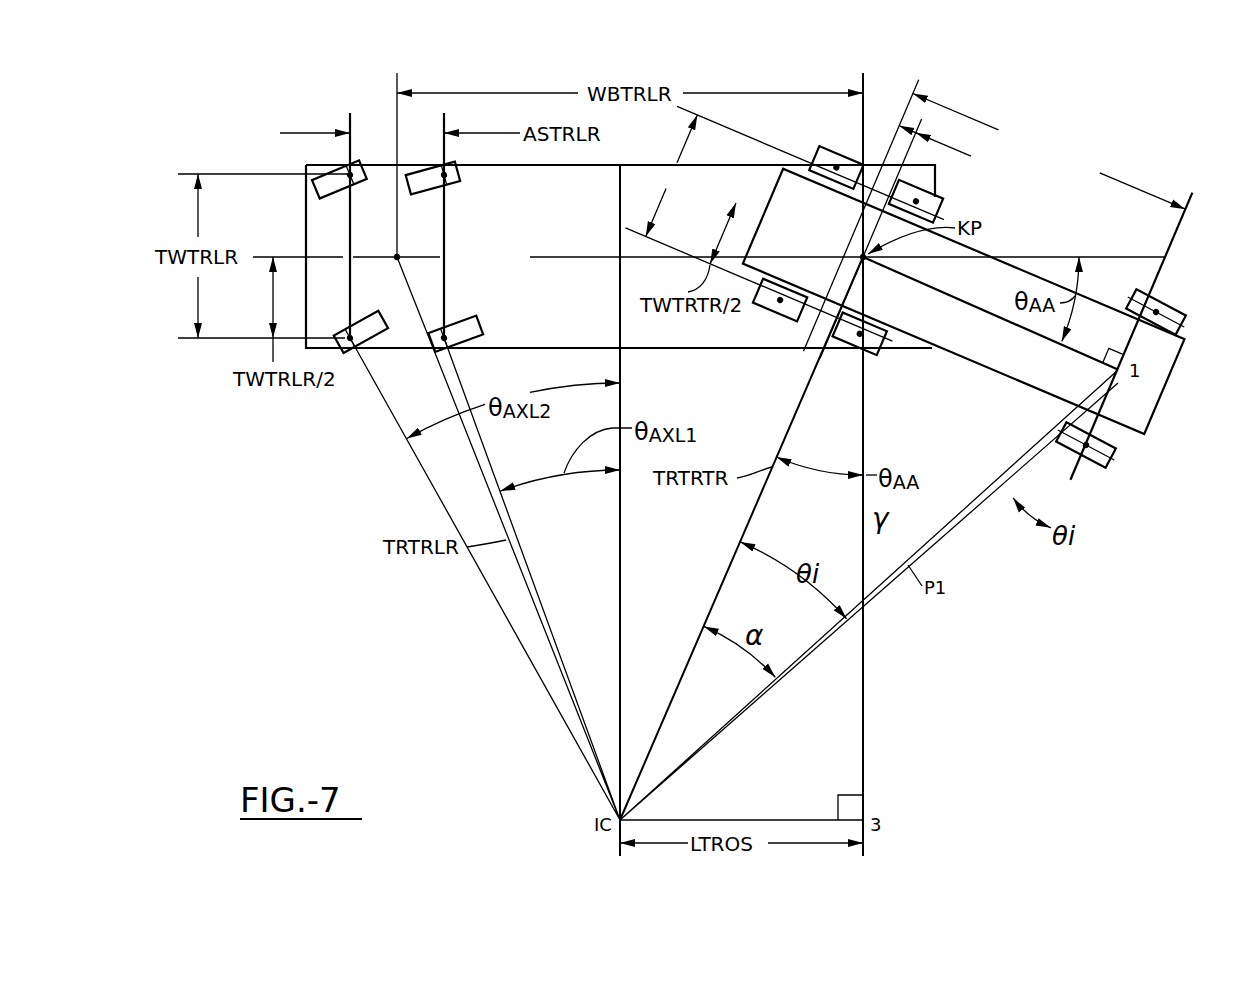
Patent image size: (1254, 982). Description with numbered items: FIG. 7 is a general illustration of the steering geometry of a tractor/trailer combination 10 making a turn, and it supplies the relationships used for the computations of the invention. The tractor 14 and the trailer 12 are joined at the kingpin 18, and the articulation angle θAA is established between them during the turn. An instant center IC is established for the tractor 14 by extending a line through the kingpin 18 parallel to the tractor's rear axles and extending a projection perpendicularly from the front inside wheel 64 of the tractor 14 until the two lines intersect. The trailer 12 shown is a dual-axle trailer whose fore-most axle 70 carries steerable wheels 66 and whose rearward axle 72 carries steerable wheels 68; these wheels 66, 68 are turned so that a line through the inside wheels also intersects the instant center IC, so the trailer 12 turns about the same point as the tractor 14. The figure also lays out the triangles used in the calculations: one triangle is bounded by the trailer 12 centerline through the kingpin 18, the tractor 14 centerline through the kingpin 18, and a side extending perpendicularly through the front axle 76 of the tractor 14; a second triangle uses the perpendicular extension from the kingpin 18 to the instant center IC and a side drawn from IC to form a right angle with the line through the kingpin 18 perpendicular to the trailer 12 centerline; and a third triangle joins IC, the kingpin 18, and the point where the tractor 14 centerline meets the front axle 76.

The tractor-trailer vehicle 10 is at (772, 249).
The trailer 12 is at (681, 355).
The tractor 14 is at (911, 249).
The kingpin 18 is at (858, 252).
The front inside wheel 64 is at (1092, 456).
The steerable wheels 66 is at (462, 178).
The steerable wheels 68 is at (366, 183).
The fore-most axle 70 is at (448, 237).
The rearward axle 72 is at (350, 237).
The front axle 76 is at (1110, 394).